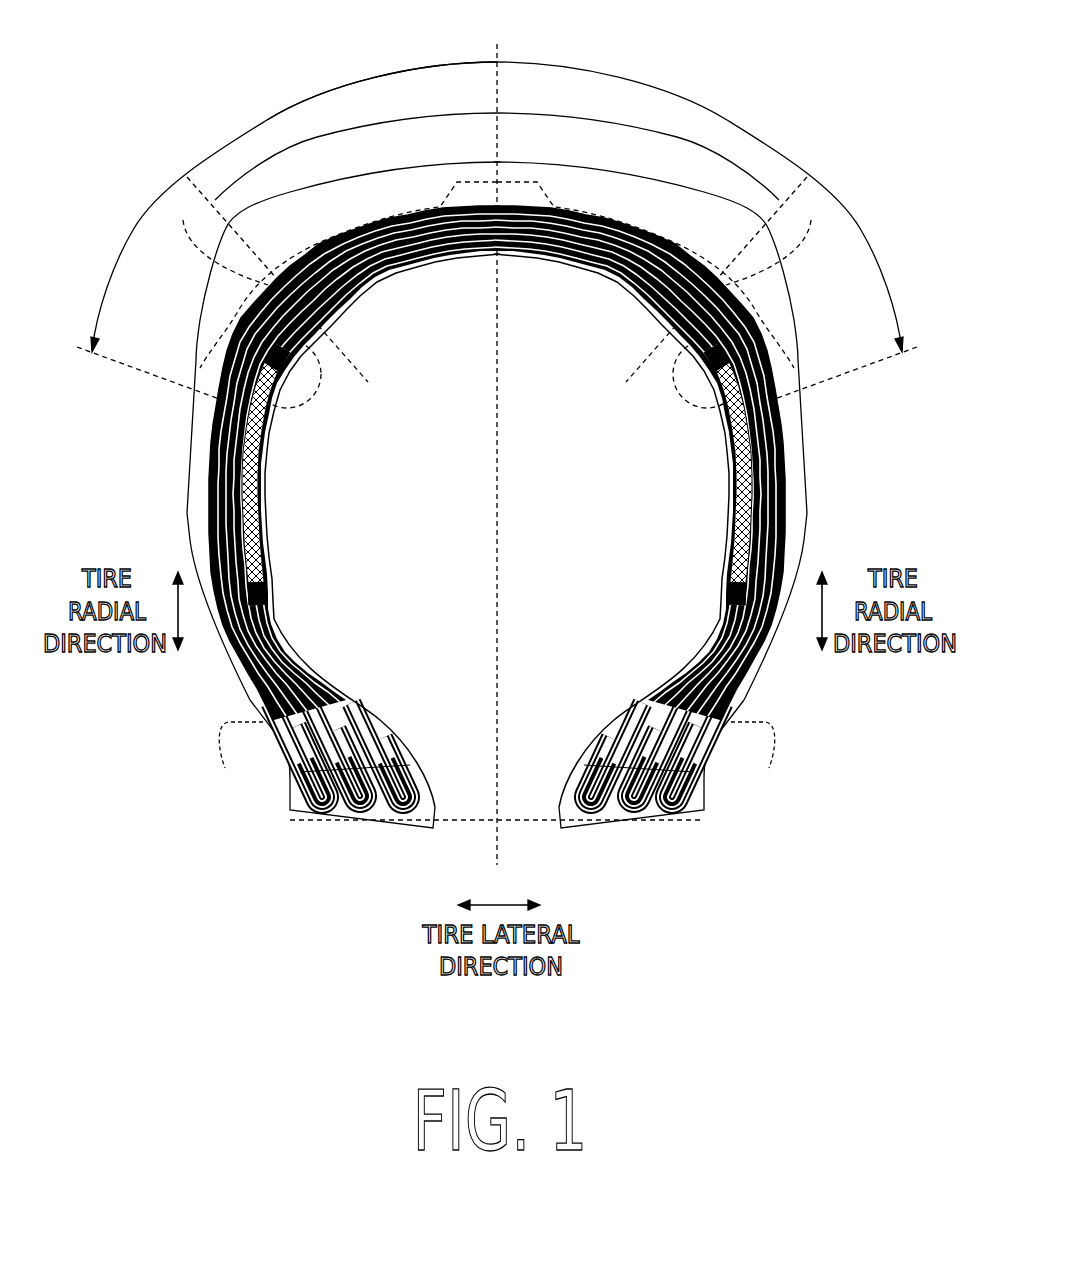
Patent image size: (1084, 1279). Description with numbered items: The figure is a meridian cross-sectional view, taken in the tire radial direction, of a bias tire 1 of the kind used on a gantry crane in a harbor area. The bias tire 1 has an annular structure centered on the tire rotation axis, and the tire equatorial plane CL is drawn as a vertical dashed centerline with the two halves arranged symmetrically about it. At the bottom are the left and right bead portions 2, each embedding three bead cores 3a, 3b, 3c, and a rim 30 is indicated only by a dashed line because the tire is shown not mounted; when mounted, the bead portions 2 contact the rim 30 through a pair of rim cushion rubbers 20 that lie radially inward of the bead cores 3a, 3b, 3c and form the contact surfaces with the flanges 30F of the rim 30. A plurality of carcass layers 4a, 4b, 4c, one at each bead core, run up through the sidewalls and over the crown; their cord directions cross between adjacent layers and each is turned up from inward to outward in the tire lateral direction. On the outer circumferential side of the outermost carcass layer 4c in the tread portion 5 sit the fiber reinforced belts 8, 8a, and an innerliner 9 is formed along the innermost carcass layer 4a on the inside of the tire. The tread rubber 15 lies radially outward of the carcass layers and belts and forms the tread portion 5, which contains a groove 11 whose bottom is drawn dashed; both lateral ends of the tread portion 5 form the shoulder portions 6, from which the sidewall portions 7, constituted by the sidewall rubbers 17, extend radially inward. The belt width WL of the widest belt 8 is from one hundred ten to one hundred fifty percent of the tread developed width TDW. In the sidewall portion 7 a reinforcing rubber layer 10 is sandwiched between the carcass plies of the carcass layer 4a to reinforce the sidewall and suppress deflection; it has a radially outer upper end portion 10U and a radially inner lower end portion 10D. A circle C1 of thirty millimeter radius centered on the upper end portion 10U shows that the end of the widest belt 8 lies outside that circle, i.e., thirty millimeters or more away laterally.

The bias tire 1 is at (236, 98).
The bead portion 2 is at (388, 830).
The bead core 3a is at (403, 814).
The bead core 3b is at (360, 812).
The bead core 3c is at (323, 812).
The carcass layer 4a is at (380, 757).
The carcass layer 4b is at (343, 740).
The carcass layer 4c is at (313, 708).
The tread portion 5 is at (427, 163).
The shoulder portion 6 is at (221, 188).
The sidewall portion 7 is at (188, 478).
The belt 8 is at (223, 400).
The belt 8a is at (237, 382).
The innerliner 9 is at (733, 517).
The reinforcing rubber layer 10 is at (255, 545).
The upper end portion 10U is at (262, 352).
The lower end portion 10D is at (272, 612).
The groove 11 is at (498, 279).
The tread rubber 15 is at (377, 187).
The sidewall rubber 17 is at (197, 513).
The rim cushion rubber 20 is at (290, 812).
The rim 30 is at (525, 837).
The flange 30F is at (500, 758).
The tire equatorial plane CL is at (497, 441).
The belt width WL is at (133, 228).
The tread developed width TDW is at (563, 116).
The circle C1 is at (320, 363).